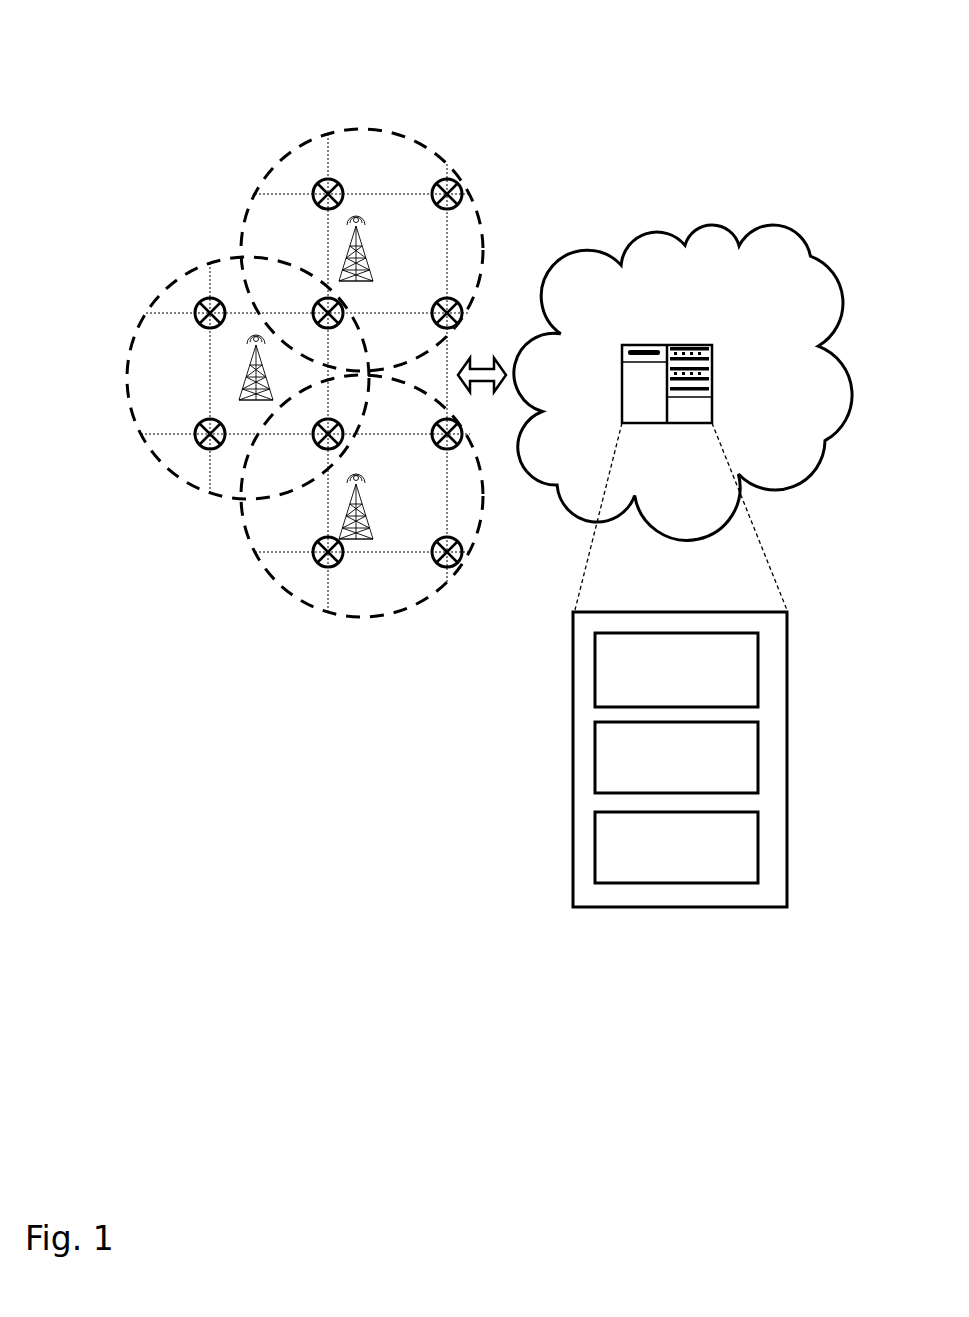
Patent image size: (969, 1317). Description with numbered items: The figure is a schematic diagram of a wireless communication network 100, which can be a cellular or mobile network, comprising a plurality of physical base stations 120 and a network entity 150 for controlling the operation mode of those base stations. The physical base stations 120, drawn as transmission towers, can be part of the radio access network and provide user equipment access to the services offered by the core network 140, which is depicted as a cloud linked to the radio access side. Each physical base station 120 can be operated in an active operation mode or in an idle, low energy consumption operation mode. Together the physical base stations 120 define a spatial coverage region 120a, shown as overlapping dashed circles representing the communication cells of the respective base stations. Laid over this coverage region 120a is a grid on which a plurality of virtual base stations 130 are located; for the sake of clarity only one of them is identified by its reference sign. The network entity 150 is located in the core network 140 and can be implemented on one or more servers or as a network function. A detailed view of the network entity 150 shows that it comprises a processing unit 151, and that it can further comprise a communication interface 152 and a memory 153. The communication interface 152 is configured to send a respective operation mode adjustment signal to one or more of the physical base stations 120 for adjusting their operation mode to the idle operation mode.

The wireless communication network 100 is at (613, 90).
The physical base station 120 is at (366, 233).
The spatial coverage region 120a is at (393, 128).
The virtual base station 130 is at (313, 190).
The core network 140 is at (812, 253).
The network entity 150 is at (682, 597).
The processing unit 151 is at (758, 680).
The communication interface 152 is at (595, 760).
The memory 153 is at (595, 853).